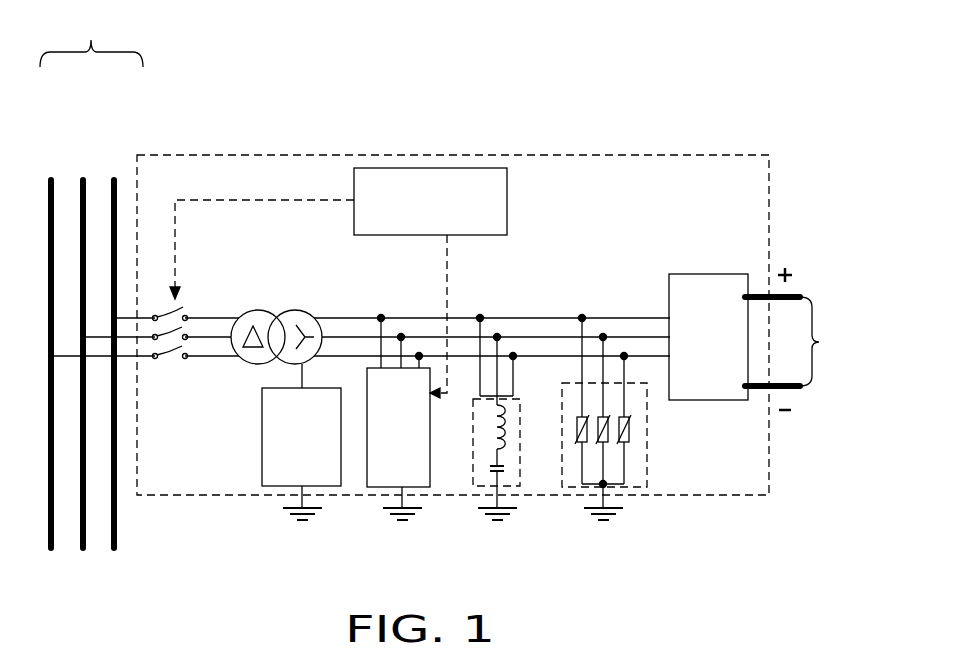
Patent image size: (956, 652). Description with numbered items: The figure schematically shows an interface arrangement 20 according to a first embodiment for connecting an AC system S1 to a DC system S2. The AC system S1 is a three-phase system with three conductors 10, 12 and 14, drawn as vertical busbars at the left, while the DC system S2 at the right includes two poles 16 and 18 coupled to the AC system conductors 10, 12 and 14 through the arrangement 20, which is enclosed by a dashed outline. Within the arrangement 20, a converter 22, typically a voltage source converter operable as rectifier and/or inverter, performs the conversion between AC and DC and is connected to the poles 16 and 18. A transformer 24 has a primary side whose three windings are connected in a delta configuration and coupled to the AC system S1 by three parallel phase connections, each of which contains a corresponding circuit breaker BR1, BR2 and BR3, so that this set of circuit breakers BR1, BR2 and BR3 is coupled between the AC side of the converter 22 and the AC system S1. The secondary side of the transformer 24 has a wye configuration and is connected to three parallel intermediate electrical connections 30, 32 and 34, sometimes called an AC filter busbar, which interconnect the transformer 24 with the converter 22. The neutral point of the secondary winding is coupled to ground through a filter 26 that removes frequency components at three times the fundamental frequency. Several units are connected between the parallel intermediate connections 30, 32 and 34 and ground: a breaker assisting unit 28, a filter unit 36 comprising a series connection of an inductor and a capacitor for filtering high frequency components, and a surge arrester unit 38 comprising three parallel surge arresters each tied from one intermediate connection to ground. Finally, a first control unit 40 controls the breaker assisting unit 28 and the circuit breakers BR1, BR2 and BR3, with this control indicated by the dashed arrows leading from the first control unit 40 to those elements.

The AC system S1 is at (91, 36).
The conductor 10 is at (52, 180).
The conductor 12 is at (84, 180).
The conductor 14 is at (115, 200).
The pole 16 is at (794, 290).
The pole 18 is at (788, 388).
The interface arrangement 20 is at (380, 157).
The converter 22 is at (708, 337).
The transformer 24 is at (267, 311).
The filter 26 is at (301, 454).
The breaker assisting unit 28 is at (398, 418).
The intermediate electrical connection 30 is at (518, 317).
The intermediate electrical connection 32 is at (573, 338).
The intermediate electrical connection 34 is at (653, 355).
The filter unit 36 is at (518, 435).
The surge arrester unit 38 is at (647, 450).
The first control unit 40 is at (338, 283).
The circuit breaker BR1 is at (178, 302).
The circuit breaker BR2 is at (170, 332).
The circuit breaker BR3 is at (168, 348).
The DC system S2 is at (827, 341).